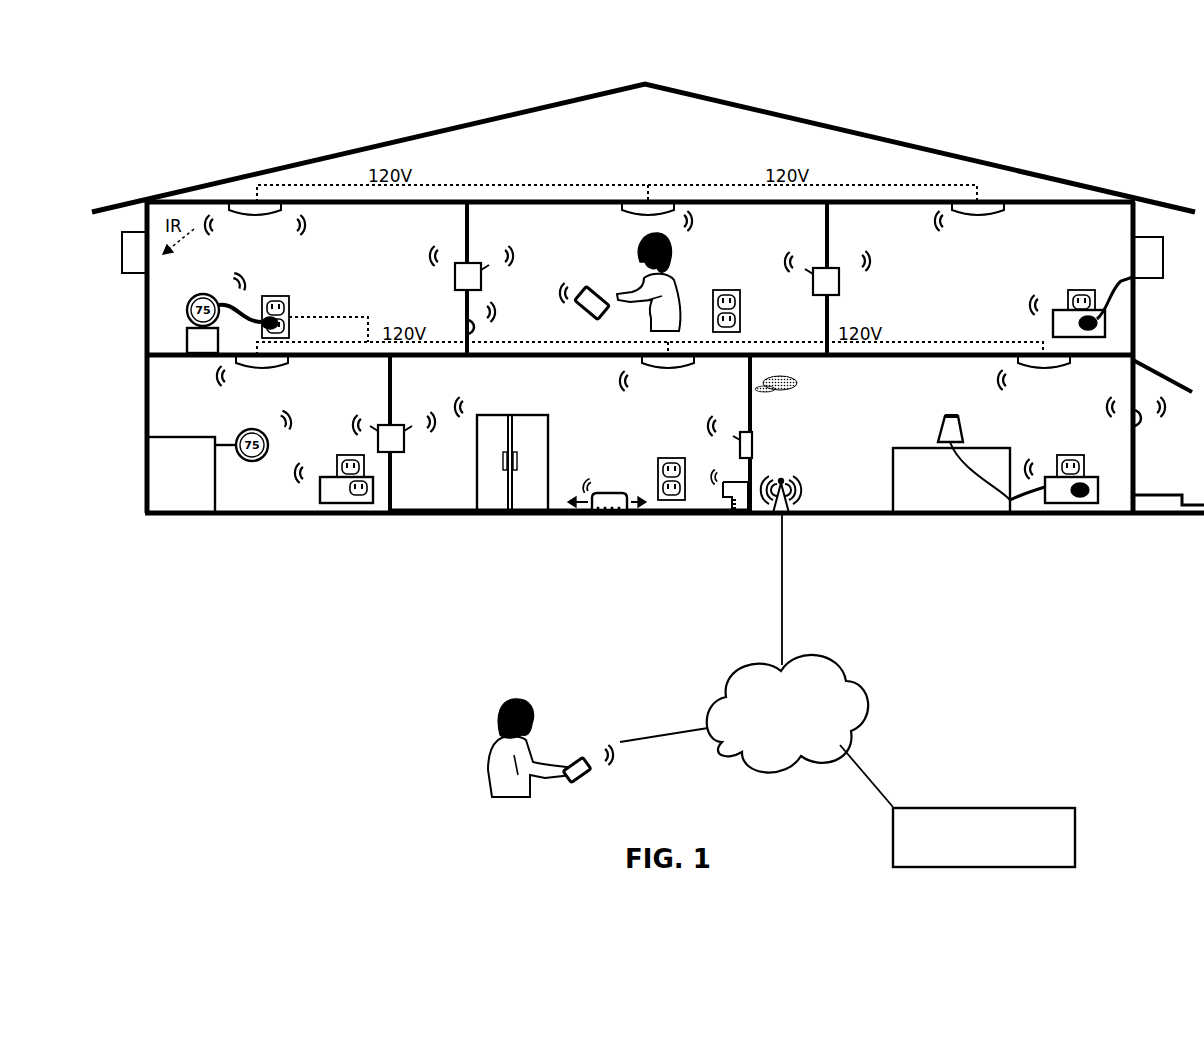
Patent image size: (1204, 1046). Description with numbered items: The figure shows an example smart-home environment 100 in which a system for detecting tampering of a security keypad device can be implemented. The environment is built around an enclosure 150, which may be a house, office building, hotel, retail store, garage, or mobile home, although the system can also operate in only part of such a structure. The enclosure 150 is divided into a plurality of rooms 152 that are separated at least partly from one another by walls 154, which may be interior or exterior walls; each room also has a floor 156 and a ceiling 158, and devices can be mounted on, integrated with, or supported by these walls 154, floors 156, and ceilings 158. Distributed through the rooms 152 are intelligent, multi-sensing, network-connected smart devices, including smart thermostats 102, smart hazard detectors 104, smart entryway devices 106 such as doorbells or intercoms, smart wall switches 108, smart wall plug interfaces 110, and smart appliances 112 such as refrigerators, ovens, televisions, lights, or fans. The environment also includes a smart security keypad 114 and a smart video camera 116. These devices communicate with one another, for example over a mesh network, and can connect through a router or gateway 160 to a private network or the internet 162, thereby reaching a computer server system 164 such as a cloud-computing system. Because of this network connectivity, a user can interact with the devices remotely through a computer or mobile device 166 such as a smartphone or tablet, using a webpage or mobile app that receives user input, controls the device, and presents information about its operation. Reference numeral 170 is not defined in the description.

The smart-home environment 100 is at (1150, 124).
The smart thermostat 102 is at (250, 462).
The smart hazard detector 104 is at (252, 208).
The smart entryway device 106 is at (1146, 428).
The smart wall switch 108 is at (398, 454).
The smart wall plug interface 110 is at (335, 494).
The smart appliance 112 is at (495, 500).
The smart security keypad 114 is at (951, 441).
The smart video camera 116 is at (793, 388).
The enclosure 150 is at (381, 143).
The rooms 152 is at (1043, 215).
The walls 154 is at (824, 228).
The floor 156 is at (466, 511).
The ceiling 158 is at (556, 360).
The router or gateway 160 is at (773, 515).
The internet 162 is at (862, 710).
The computer server system 164 is at (1075, 843).
The mobile device 166 is at (580, 290).
The wall-mounted device 170 is at (476, 328).